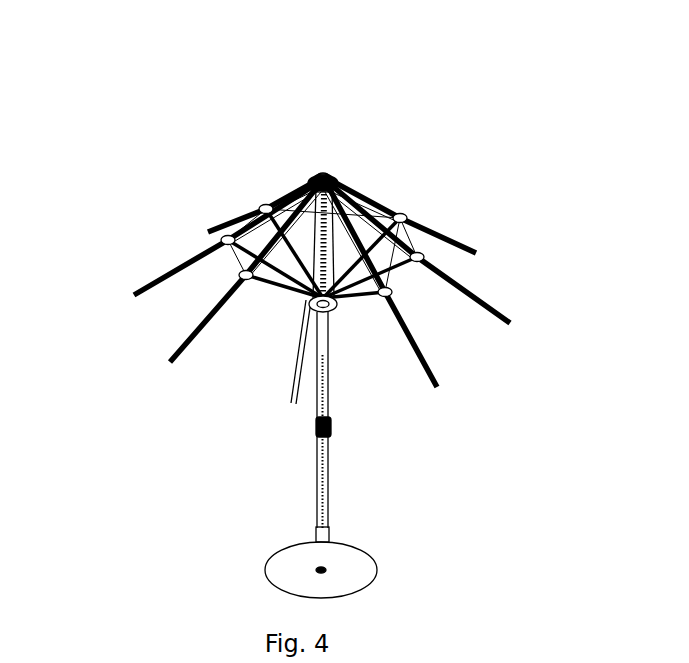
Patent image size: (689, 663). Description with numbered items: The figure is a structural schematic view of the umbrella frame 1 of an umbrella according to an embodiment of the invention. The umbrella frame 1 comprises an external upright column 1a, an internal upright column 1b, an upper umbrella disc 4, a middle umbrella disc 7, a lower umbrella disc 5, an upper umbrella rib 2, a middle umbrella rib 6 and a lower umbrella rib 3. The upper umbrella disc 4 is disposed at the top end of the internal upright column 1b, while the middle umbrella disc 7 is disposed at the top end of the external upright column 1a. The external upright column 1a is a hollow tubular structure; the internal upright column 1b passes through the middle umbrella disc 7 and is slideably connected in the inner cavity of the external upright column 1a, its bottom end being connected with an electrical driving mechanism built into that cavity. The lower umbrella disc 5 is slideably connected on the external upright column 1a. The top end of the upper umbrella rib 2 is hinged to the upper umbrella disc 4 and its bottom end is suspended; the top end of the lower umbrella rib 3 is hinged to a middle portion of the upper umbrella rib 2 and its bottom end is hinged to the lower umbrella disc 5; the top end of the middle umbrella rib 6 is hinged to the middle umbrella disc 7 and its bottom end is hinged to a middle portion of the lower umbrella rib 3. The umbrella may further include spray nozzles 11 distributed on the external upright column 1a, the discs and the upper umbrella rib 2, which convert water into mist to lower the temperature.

The umbrella frame 1 is at (324, 156).
The external upright column 1a is at (332, 387).
The internal upright column 1b is at (303, 182).
The spray nozzle 11 is at (343, 173).
The upper umbrella rib 2 is at (197, 330).
The lower umbrella rib 3 is at (268, 282).
The upper umbrella disc 4 is at (318, 176).
The lower umbrella disc 5 is at (309, 320).
The middle umbrella rib 6 is at (242, 257).
The middle umbrella disc 7 is at (367, 198).